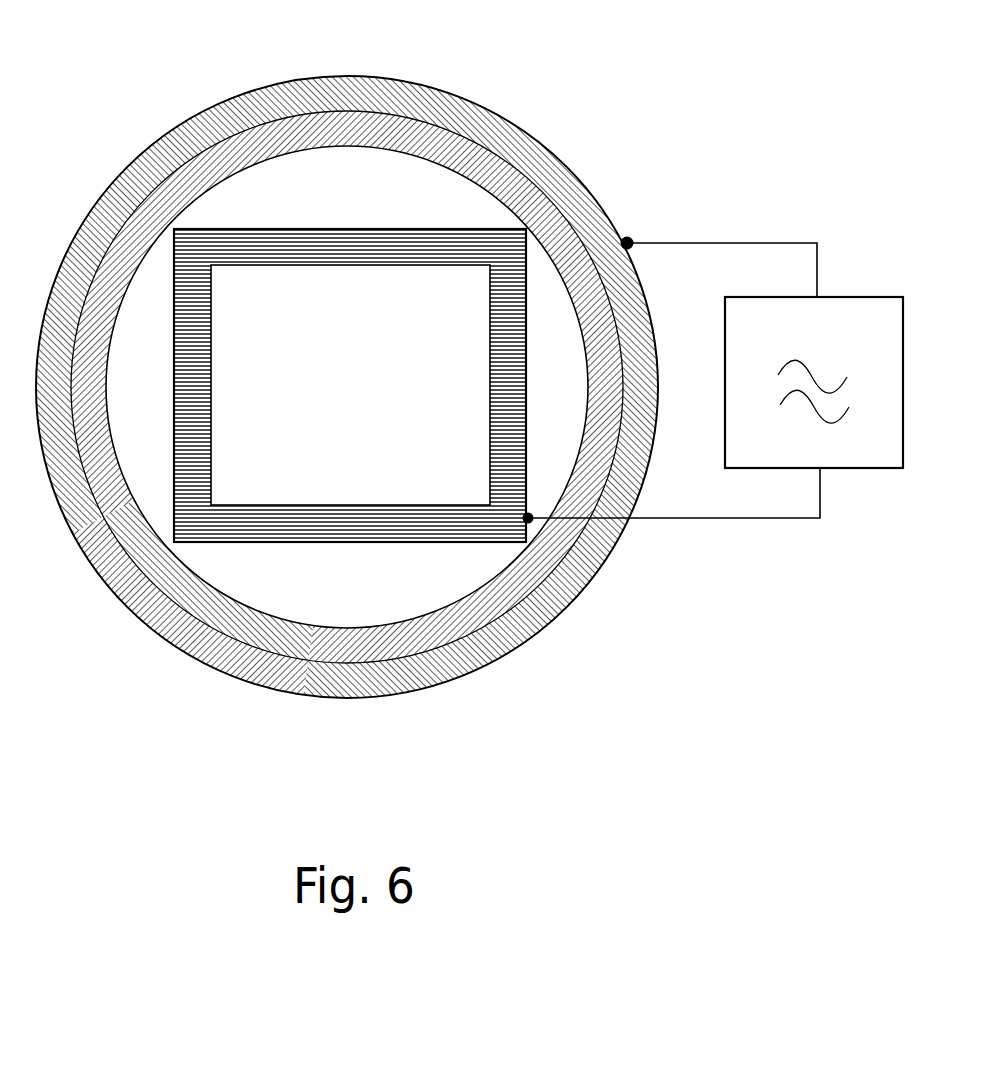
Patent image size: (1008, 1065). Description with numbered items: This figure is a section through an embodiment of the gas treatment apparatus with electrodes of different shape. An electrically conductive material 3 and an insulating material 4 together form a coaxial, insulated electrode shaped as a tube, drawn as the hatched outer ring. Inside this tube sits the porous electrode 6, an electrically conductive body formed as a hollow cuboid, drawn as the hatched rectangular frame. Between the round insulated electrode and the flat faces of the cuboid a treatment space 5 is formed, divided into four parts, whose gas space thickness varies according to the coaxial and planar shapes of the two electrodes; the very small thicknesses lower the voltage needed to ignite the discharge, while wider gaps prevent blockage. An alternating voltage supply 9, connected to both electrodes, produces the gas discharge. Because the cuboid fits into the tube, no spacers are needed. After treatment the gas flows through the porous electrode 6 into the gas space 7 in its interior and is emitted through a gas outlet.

The electrically conductive material 3 is at (105, 210).
The insulating material 4 is at (243, 135).
The treatment space 5 is at (348, 178).
The porous electrode 6 is at (455, 228).
The gas space 7 is at (429, 338).
The alternating voltage supply 9 is at (872, 330).